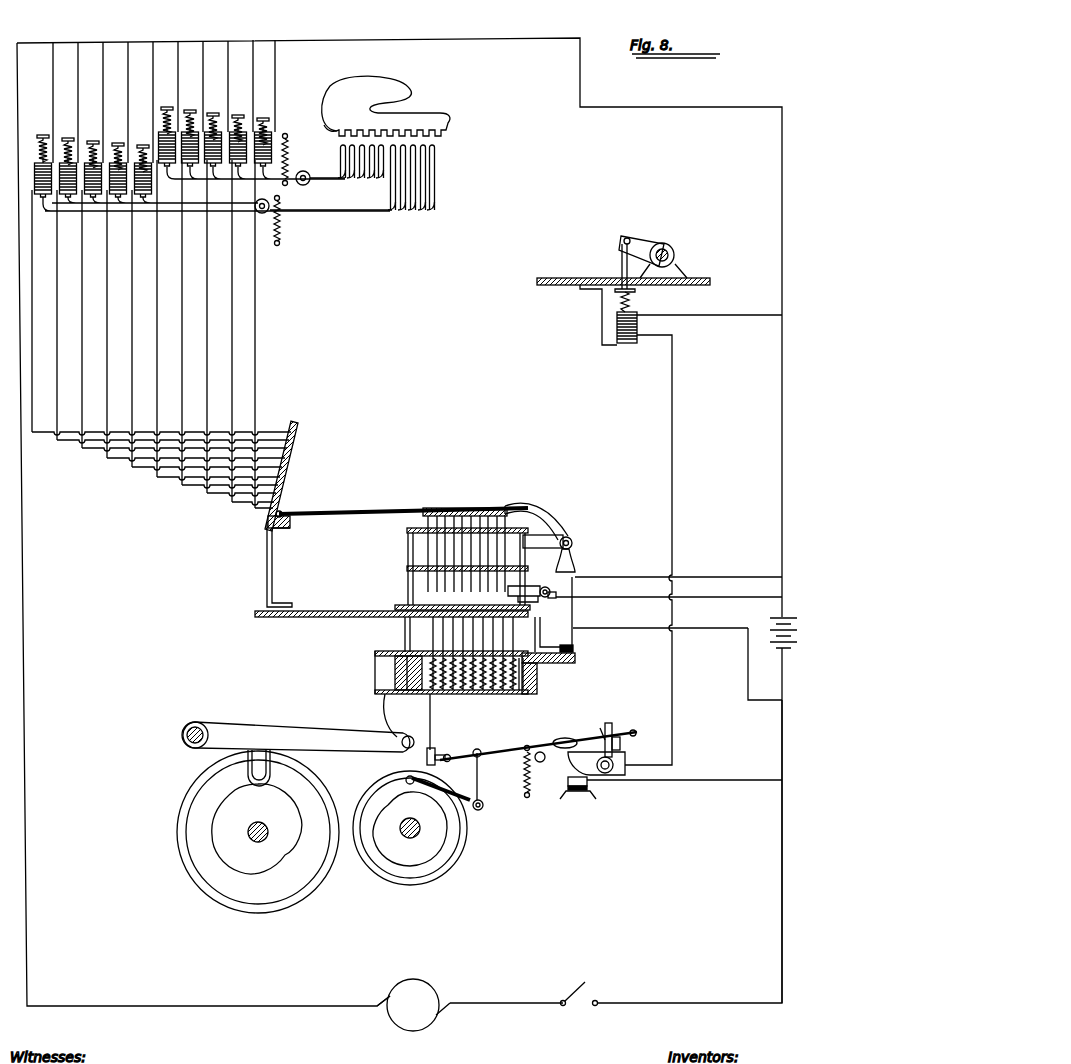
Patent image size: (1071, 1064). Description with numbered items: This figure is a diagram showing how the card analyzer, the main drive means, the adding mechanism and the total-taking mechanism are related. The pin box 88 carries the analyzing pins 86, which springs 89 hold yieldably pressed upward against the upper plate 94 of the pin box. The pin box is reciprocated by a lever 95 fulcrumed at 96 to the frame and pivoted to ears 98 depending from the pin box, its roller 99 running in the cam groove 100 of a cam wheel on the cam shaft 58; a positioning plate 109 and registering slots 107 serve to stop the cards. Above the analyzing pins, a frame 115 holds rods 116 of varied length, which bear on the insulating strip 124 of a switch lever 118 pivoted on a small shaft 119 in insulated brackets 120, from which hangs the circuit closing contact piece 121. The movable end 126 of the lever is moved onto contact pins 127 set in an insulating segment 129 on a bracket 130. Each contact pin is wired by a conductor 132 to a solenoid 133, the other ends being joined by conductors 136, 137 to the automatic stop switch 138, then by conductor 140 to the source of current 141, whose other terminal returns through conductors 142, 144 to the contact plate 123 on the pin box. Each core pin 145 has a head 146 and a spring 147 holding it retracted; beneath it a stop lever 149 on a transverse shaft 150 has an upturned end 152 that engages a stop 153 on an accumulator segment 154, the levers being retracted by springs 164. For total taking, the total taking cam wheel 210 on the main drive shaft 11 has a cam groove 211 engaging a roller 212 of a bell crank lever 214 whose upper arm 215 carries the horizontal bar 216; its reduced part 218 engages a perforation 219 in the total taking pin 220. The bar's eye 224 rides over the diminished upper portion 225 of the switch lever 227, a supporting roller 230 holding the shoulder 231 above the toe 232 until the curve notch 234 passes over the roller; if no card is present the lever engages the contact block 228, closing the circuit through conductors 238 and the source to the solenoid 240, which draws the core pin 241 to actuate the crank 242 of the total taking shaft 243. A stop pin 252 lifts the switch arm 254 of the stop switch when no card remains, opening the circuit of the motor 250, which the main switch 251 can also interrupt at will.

The conductor 136 is at (100, 92).
The conductor 137 is at (447, 39).
The spring 147 is at (171, 108).
The head 146 is at (216, 112).
The core pin 145 is at (247, 118).
The solenoid 133 is at (275, 147).
The spring 164 is at (288, 152).
The transverse shaft 150 is at (310, 182).
The stop lever 149 is at (320, 176).
The upturned end 152 is at (432, 186).
The accumulator segment 154 is at (414, 127).
The stop 153 is at (328, 124).
The conductor 132 is at (257, 352).
The contact pin 127 is at (300, 434).
The segment 129 is at (266, 522).
The bracket 130 is at (266, 569).
The movable end 126 is at (283, 513).
The switch lever 118 is at (355, 509).
The insulating strip 124 is at (440, 508).
The registering slot 107 is at (404, 631).
The rod 116 is at (520, 501).
The frame 115 is at (541, 520).
The insulated bracket 120 is at (560, 538).
The small shaft 119 is at (573, 542).
The circuit closing contact piece 121 is at (573, 564).
The switch arm 254 is at (530, 585).
The automatic stop switch 138 is at (565, 597).
The conductor 140 is at (710, 598).
The source of current 141 is at (772, 627).
The positioning plate 109 is at (541, 630).
The circuit closing contact plate 123 is at (575, 648).
The conductor 144 is at (748, 690).
The conductor 142 is at (781, 692).
The conductor 238 is at (673, 371).
The upper plate of the pin box 94 is at (375, 655).
The stop pin 252 is at (550, 662).
The spring 89 is at (478, 696).
The analyzing pin 86 is at (505, 696).
The pin box 88 is at (535, 695).
The fulcrum 96 is at (196, 722).
The lever 95 is at (240, 725).
The ear 98 is at (386, 719).
The total taking pin 220 is at (432, 736).
The reduced part 218 is at (449, 755).
The perforation 219 is at (447, 762).
The horizontal bar 216 is at (503, 756).
The curve notch 234 is at (562, 740).
The upper arm 215 is at (485, 805).
The roller 212 is at (405, 780).
The roller 99 is at (270, 777).
The cam groove 100 is at (298, 845).
The cam shaft 58 is at (256, 822).
The total taking cam wheel 210 is at (467, 841).
The cam groove 211 is at (455, 868).
The bell crank lever 214 is at (435, 791).
The main drive shaft 11 is at (410, 839).
The diminished upper portion 225 is at (610, 727).
The switch lever 227 is at (600, 728).
The eye 224 is at (621, 740).
The shoulder 231 is at (637, 734).
The toe 232 is at (626, 751).
The contact block 228 is at (568, 783).
The supporting roller 230 is at (531, 786).
The total taking shaft 243 is at (671, 251).
The crank 242 is at (645, 233).
The core pin 241 is at (622, 303).
The solenoid 240 is at (625, 338).
The motor 250 is at (410, 1031).
The main switch 251 is at (587, 1012).